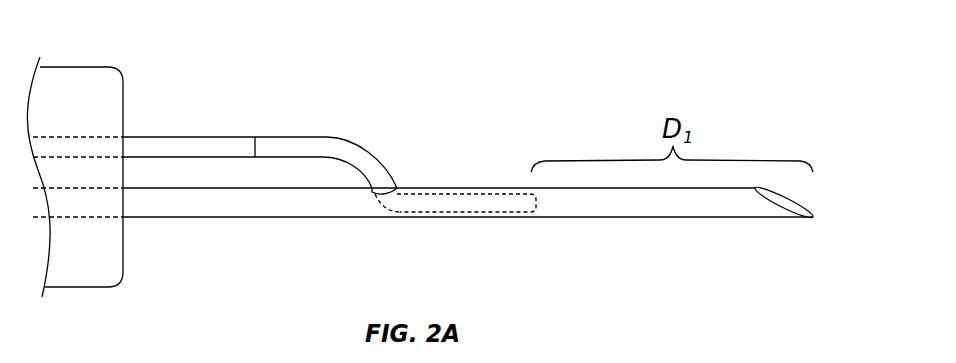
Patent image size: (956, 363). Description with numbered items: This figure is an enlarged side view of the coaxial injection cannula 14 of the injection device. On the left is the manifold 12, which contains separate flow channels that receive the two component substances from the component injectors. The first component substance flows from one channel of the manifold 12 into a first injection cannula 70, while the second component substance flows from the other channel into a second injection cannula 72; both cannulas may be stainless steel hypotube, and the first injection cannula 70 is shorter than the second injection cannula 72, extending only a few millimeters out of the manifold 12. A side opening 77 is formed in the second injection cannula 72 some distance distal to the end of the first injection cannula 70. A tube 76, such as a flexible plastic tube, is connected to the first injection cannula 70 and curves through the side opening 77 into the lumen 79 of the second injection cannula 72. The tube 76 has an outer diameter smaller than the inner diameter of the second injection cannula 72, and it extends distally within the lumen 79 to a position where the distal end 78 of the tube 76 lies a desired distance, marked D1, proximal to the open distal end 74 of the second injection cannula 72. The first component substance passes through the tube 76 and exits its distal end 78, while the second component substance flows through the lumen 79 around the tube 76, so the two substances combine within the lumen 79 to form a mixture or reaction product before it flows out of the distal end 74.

The manifold 12 is at (67, 65).
The first injection cannula 70 is at (190, 135).
The tube 76 is at (382, 150).
The side opening 77 is at (405, 186).
The coaxial injection cannula 14 is at (491, 201).
The second injection cannula 72 is at (235, 218).
The open distal end 74 is at (792, 207).
The distal end of the tube 78 is at (542, 207).
The lumen 79 is at (367, 202).